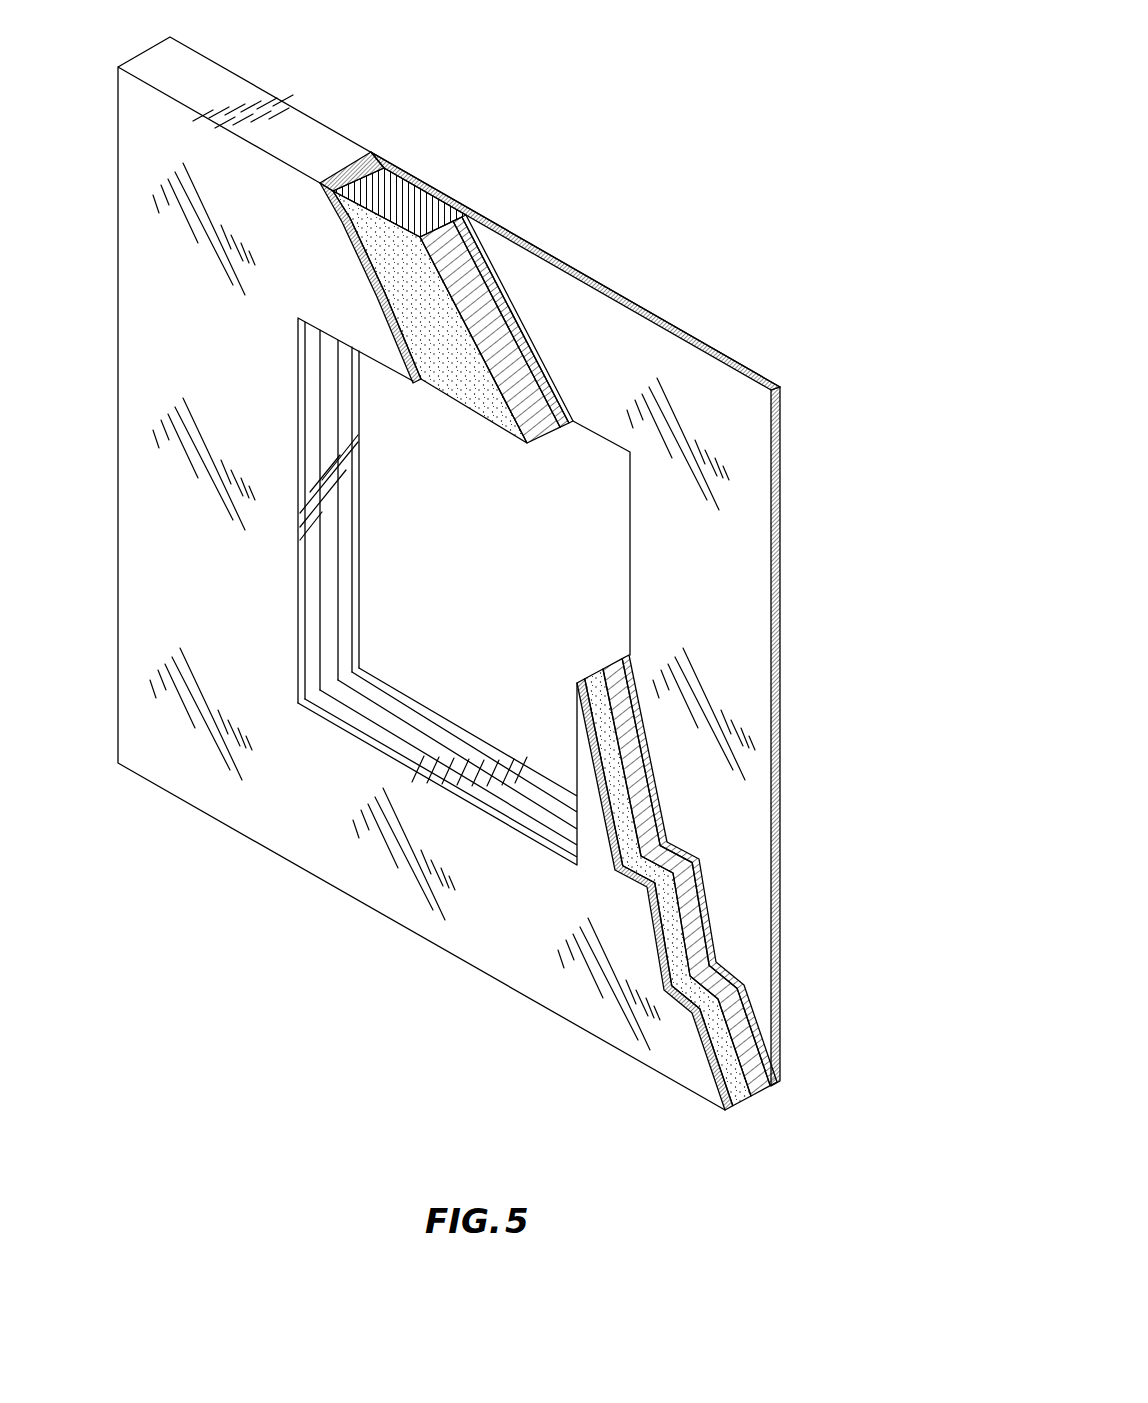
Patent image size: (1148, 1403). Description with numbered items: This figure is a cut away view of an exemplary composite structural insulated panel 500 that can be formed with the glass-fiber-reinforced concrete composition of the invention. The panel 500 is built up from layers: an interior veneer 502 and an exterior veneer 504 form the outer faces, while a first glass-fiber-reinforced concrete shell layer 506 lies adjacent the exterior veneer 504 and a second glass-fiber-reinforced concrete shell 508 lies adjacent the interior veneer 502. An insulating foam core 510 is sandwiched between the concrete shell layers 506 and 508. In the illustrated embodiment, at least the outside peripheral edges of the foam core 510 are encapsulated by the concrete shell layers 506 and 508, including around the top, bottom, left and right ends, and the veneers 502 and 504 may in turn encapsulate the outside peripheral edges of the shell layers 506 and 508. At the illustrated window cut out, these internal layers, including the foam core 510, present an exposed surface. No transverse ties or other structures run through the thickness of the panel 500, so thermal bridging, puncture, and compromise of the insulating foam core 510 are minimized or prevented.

The composite panel 500 is at (572, 118).
The interior veneer 502 is at (188, 768).
The exterior veneer 504 is at (593, 277).
The first glass-fiber-reinforced concrete shell layer 506 is at (480, 413).
The second glass-fiber-reinforced concrete shell 508 is at (572, 418).
The insulating foam core 510 is at (557, 440).